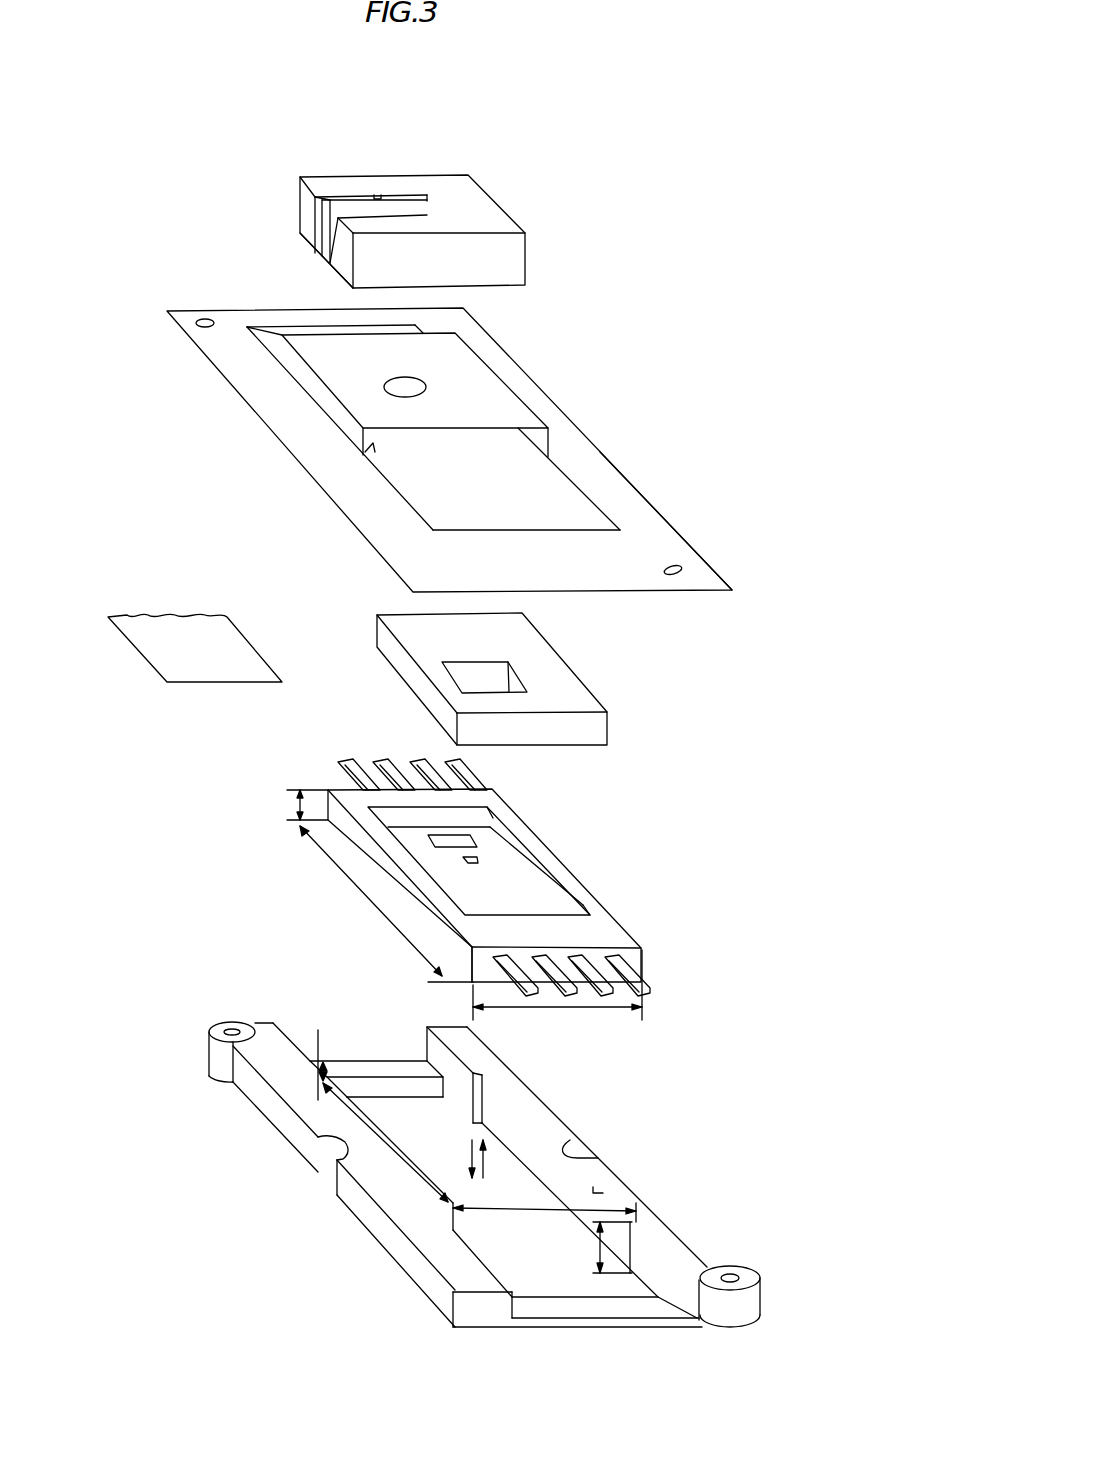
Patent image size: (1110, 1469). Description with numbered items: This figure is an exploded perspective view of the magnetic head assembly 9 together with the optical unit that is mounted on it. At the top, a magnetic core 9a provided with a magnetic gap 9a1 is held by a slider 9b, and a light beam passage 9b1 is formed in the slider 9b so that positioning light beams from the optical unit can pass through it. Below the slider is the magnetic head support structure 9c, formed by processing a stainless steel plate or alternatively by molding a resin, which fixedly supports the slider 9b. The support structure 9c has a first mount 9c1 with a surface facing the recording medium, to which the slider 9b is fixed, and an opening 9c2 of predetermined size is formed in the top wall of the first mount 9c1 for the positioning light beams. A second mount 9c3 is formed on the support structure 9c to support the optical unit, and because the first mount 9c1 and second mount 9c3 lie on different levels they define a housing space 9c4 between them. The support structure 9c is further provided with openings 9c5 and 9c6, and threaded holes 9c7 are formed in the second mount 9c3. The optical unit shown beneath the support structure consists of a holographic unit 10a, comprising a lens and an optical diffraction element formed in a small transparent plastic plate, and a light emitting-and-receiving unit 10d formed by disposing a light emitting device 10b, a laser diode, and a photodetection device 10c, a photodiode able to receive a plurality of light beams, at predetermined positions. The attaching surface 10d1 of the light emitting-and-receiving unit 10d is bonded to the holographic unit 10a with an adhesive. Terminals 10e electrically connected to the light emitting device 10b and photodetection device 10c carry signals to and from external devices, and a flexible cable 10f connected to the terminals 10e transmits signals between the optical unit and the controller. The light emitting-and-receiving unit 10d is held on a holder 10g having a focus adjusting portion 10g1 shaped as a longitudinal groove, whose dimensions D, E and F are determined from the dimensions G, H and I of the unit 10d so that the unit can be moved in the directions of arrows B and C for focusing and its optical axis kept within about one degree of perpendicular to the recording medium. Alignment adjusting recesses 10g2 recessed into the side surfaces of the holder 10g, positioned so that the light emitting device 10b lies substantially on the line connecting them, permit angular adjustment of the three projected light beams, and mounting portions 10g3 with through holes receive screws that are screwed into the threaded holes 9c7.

The magnetic head assembly 9 is at (475, 182).
The magnetic core 9a is at (410, 197).
The magnetic gap 9a1 is at (378, 197).
The slider 9b is at (502, 213).
The light beam passage 9b1 is at (340, 210).
The magnetic head support structure 9c is at (602, 457).
The first mount 9c1 is at (477, 367).
The opening 9c2 is at (405, 392).
The second mount 9c3 is at (645, 540).
The housing space 9c4 is at (365, 452).
The opening 9c5 is at (547, 502).
The opening 9c6 is at (272, 340).
The threaded holes 9c7 is at (205, 320).
The holographic unit 10a is at (555, 657).
The light emitting device 10b is at (475, 860).
The photodetection device 10c is at (488, 825).
The light emitting-and-receiving unit 10d is at (570, 865).
The attaching surface 10d1 is at (577, 902).
The terminals 10e is at (338, 762).
The flexible cable 10f is at (252, 650).
The holder 10g is at (697, 1247).
The focus adjusting portion 10g1 is at (593, 1187).
The alignment adjusting recesses 10g2 is at (325, 1167).
The mounting portions 10g3 is at (225, 1022).